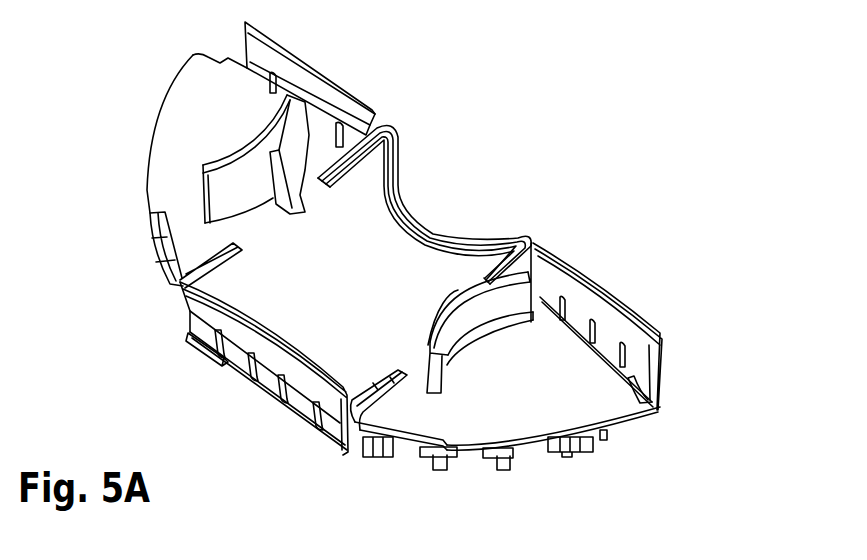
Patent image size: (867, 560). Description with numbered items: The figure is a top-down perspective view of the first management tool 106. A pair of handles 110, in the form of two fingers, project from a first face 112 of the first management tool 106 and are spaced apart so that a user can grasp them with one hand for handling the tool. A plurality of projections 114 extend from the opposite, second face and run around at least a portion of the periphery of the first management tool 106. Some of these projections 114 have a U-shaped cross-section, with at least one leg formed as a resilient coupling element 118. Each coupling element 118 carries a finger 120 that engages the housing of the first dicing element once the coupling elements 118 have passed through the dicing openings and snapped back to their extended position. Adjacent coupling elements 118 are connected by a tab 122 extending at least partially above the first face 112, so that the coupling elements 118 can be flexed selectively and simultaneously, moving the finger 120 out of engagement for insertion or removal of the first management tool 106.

The first management tool 106 is at (126, 76).
The handles 110 is at (306, 133).
The first face 112 is at (200, 84).
The projections 114 is at (563, 457).
The coupling element 118 is at (290, 412).
The finger 120 is at (212, 368).
The tab 122 is at (325, 70).